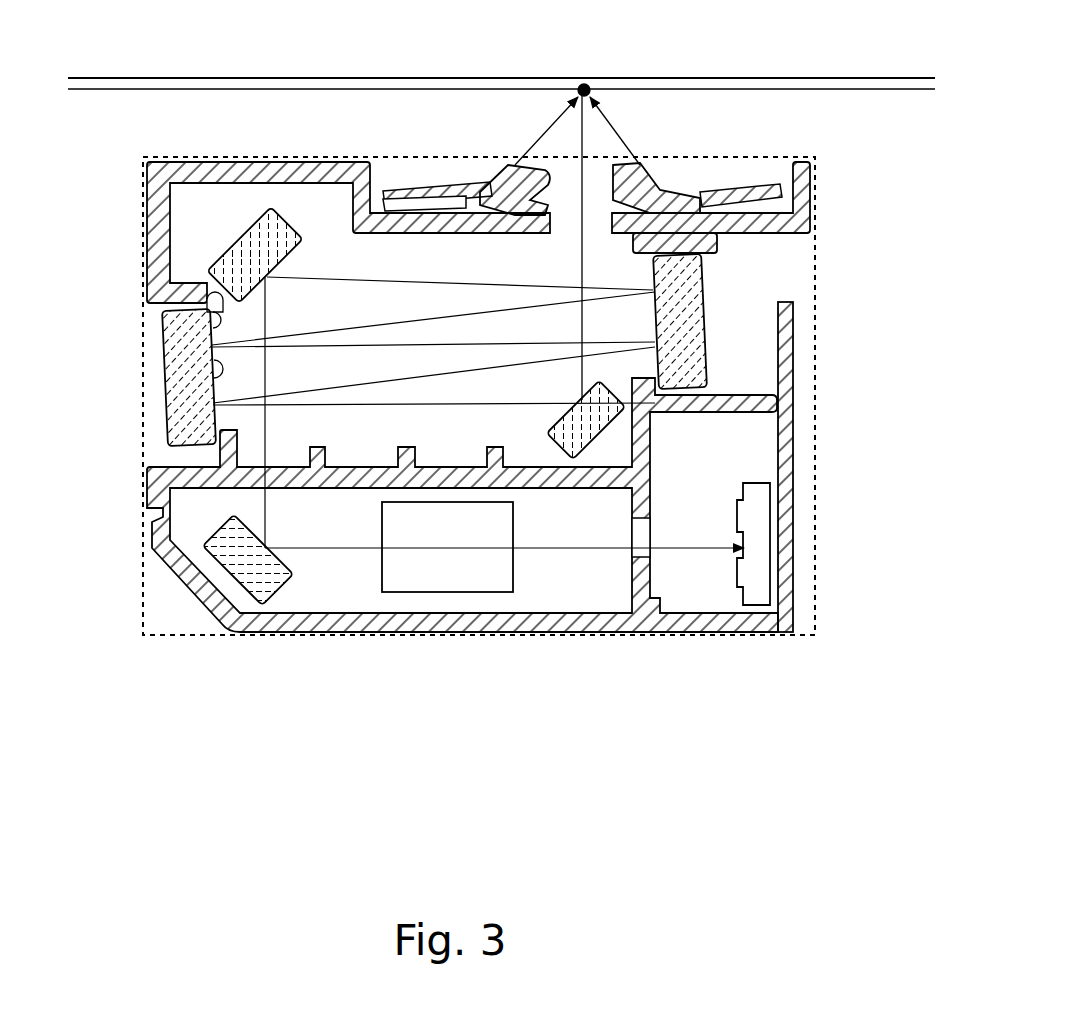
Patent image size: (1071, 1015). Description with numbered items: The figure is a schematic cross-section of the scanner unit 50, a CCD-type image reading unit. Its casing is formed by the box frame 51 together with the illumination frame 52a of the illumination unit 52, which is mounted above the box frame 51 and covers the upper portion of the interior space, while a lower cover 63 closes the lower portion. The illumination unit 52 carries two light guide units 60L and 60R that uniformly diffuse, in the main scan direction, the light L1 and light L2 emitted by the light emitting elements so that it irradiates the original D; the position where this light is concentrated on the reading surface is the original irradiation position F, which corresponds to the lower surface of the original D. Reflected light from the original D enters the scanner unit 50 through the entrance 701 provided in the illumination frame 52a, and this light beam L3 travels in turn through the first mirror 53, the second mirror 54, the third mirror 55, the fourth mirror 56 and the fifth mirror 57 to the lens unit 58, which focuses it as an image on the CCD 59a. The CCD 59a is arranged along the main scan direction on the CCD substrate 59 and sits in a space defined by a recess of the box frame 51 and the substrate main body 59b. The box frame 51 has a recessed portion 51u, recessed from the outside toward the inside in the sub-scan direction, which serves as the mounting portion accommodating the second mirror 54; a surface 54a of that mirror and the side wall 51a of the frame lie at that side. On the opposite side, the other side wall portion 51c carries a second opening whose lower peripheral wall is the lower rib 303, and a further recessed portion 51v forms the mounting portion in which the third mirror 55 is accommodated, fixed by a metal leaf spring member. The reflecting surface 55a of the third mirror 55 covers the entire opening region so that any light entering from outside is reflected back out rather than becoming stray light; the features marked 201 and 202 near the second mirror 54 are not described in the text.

The original D is at (205, 78).
The original irradiation position F is at (585, 88).
The entrance 701 is at (563, 170).
The light L1 is at (546, 131).
The light L2 is at (621, 131).
The light beam L3 is at (564, 248).
The scanner unit 50 is at (812, 640).
The box frame 51 is at (467, 540).
The side wall of frame 51a is at (147, 272).
The other side wall portion 51c is at (640, 462).
The recessed portion 51u is at (162, 457).
The recessed portion 51v is at (745, 395).
The illumination unit 52 is at (541, 205).
The illumination frame 52a is at (250, 162).
The first mirror 53 is at (628, 418).
The second mirror 54 is at (119, 383).
The lens surface 54a is at (165, 357).
The third mirror 55 is at (769, 311).
The reflecting surface 55a is at (655, 292).
The fourth mirror 56 is at (235, 240).
The fifth mirror 57 is at (230, 575).
The lens unit 58 is at (490, 600).
The CCD substrate 59 is at (832, 467).
The CCD 59a is at (757, 557).
The substrate main body 59b is at (793, 502).
The light guide unit 60L is at (478, 176).
The light guide unit 60R is at (692, 176).
The lower cover 63 is at (347, 633).
The first pressing portion 201 is at (212, 320).
The second pressing portion 202 is at (214, 443).
The lower rib 303 is at (700, 365).